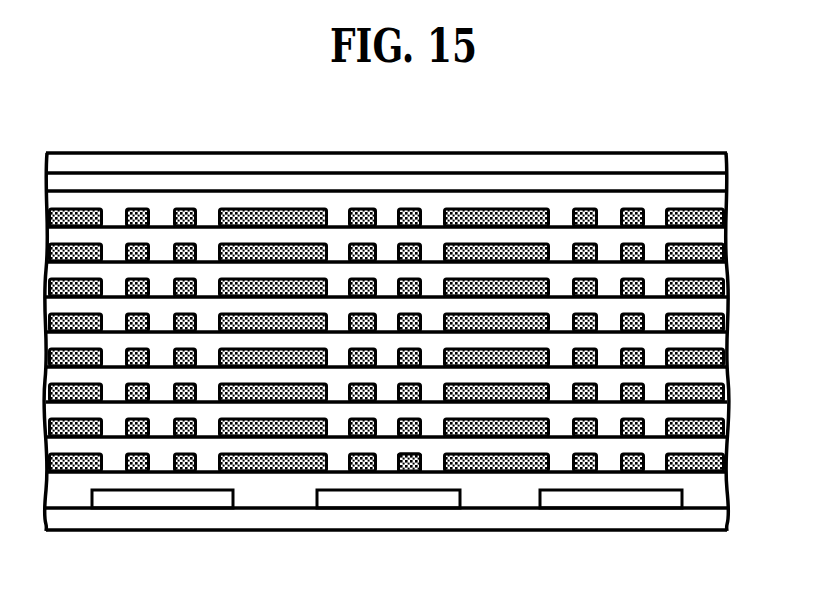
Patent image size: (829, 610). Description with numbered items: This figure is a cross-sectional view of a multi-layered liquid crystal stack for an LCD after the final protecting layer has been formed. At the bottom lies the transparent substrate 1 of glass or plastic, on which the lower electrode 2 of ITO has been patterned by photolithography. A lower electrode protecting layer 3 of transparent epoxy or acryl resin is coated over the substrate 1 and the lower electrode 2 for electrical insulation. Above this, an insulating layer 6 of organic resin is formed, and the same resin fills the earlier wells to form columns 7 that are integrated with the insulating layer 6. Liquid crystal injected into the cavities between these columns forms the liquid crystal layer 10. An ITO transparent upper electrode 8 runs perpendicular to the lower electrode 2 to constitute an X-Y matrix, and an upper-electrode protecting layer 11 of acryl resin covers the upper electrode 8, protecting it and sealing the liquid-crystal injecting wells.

The transparent substrate 1 is at (312, 515).
The lower electrode 2 is at (380, 500).
The lower electrode protecting layer 3 is at (482, 490).
The insulating layer 6 is at (406, 449).
The columns 7 is at (562, 469).
The upper electrode 8 is at (466, 185).
The liquid crystal layer 10 is at (80, 473).
The upper-electrode protecting layer 11 is at (510, 168).